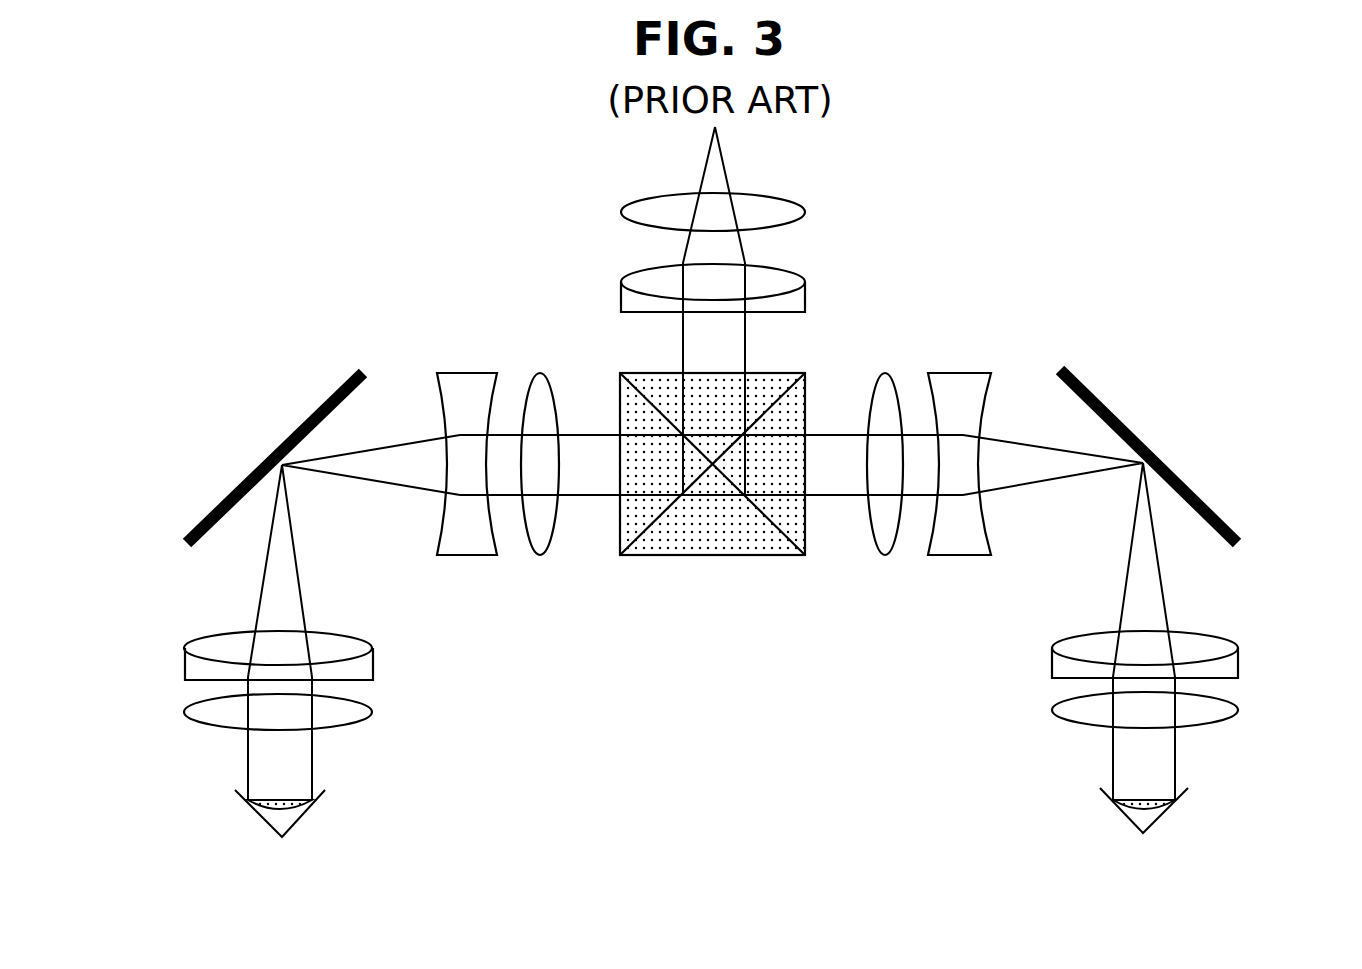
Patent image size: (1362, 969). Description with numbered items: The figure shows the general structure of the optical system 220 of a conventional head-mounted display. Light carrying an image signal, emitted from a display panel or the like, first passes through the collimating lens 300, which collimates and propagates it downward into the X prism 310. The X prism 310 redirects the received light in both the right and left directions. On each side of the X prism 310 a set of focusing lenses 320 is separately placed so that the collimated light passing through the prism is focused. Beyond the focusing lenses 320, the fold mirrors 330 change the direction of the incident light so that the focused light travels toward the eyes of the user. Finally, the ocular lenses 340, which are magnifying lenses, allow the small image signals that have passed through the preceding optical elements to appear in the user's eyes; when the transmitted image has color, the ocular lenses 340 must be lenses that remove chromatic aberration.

The optical system 220 is at (786, 853).
The collimating lens 300 is at (805, 212).
The X prism 310 is at (718, 557).
The focusing lenses 320 is at (507, 562).
The fold mirrors 330 is at (292, 432).
The ocular lenses 340 is at (185, 657).